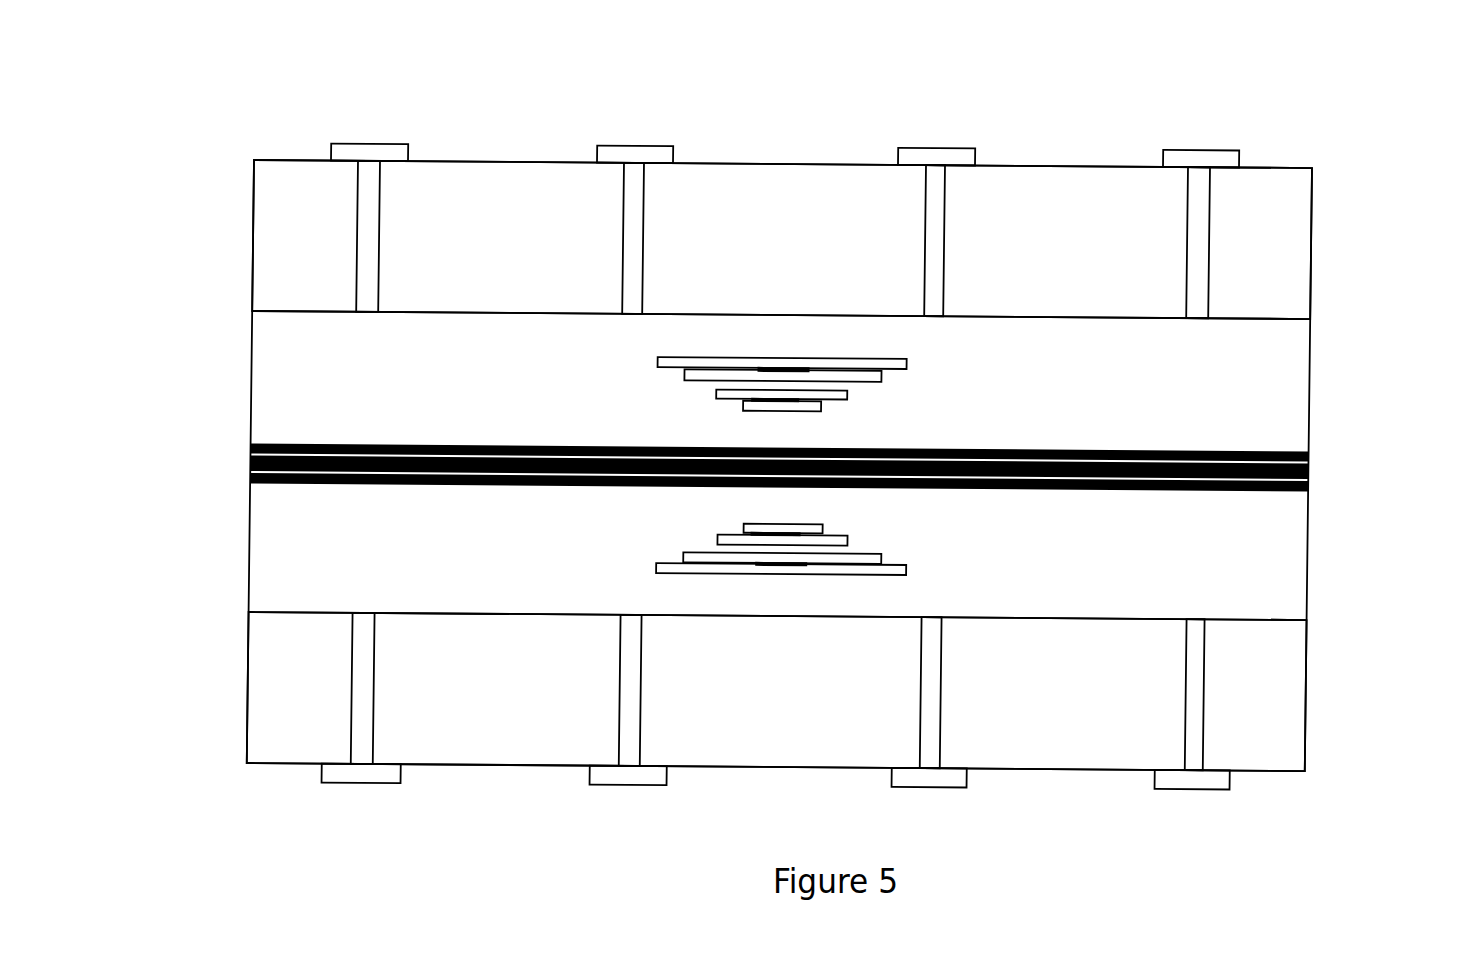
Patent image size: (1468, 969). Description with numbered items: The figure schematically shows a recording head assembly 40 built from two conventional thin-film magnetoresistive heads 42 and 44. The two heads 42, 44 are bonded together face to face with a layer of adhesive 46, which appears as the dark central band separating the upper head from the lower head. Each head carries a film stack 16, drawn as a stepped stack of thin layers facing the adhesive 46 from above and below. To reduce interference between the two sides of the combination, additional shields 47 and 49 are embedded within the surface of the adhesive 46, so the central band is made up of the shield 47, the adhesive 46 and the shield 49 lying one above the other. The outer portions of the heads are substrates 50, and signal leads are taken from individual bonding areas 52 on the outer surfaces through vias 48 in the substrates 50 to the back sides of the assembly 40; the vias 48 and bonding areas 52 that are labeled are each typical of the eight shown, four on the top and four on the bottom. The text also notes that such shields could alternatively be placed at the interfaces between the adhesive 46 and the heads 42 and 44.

The assembly 40 is at (1312, 137).
The thin-film magnetoresistive head 42 is at (1350, 171).
The thin-film magnetoresistive head 44 is at (1347, 492).
The adhesive 46 is at (1310, 472).
The shield 47 is at (1330, 461).
The shield 49 is at (1330, 483).
The via 48 is at (635, 240).
The substrate 50 is at (717, 472).
The bonding area 52 is at (613, 142).
The film stack 16 is at (620, 333).